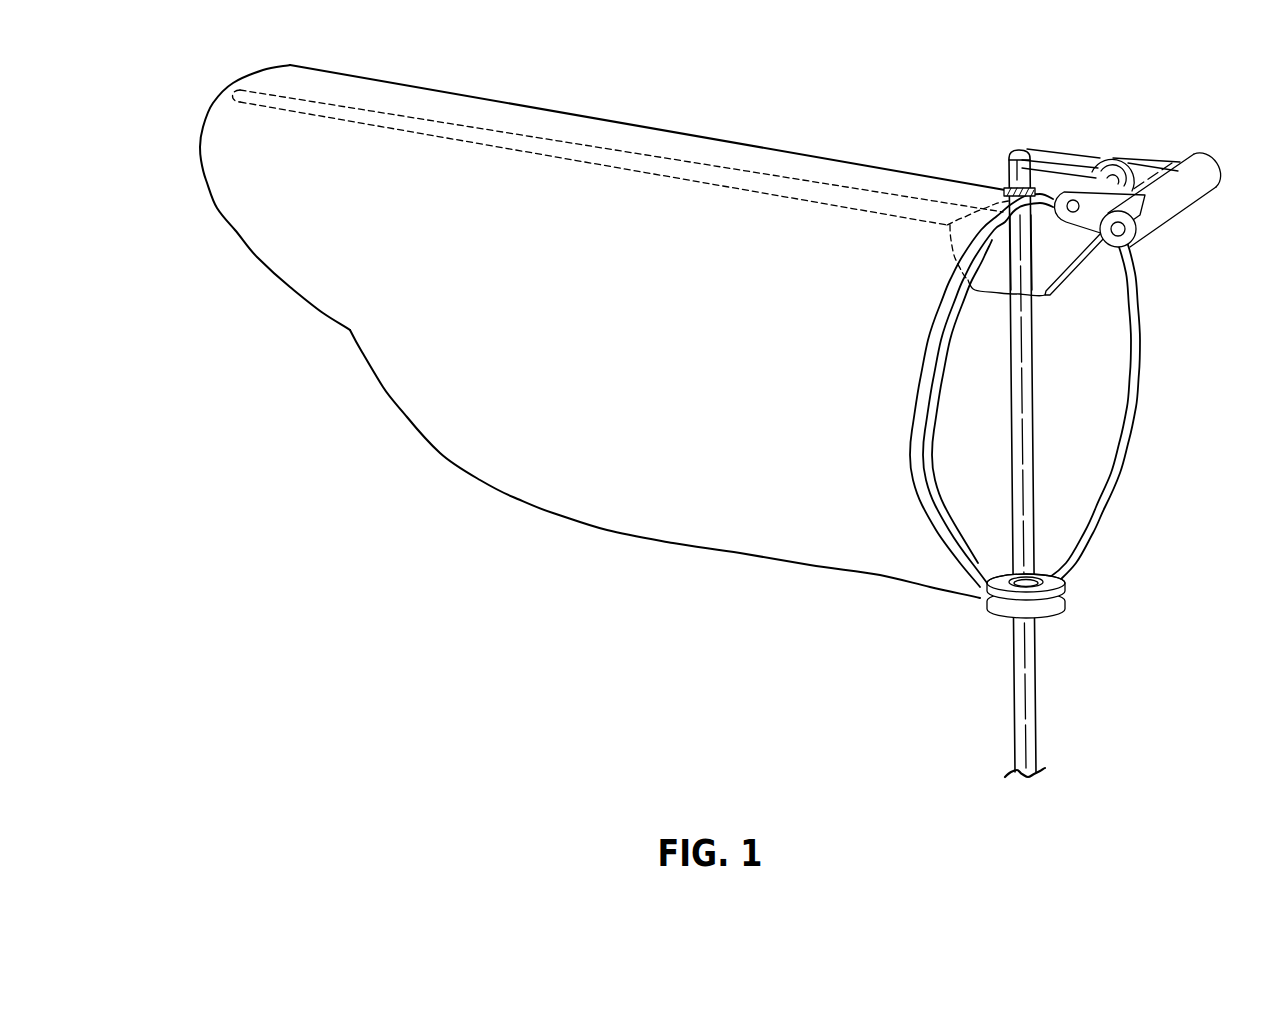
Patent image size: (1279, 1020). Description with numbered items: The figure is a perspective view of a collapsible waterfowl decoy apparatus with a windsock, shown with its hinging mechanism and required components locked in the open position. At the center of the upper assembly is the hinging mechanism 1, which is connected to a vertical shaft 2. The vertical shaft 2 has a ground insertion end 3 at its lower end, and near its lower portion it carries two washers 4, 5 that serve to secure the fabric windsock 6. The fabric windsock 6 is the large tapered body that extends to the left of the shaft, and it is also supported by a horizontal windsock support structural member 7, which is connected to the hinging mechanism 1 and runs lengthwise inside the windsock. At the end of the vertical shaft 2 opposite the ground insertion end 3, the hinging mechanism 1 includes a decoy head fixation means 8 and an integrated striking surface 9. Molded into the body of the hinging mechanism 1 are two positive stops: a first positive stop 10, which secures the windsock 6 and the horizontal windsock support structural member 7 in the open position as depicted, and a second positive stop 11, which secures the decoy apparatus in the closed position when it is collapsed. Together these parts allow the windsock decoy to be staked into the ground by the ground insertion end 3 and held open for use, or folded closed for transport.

The hinging mechanism 1 is at (1067, 252).
The vertical shaft 2 is at (1028, 717).
The ground insertion end 3 is at (1013, 770).
The washer 4 is at (1062, 585).
The washer 5 is at (1062, 602).
The fabric windsock 6 is at (512, 448).
The horizontal windsock support structural member 7 is at (663, 167).
The decoy head fixation means 8 is at (1197, 150).
The integrated striking surface 9 is at (1013, 150).
The first positive stop 10 is at (1002, 250).
The second positive stop 11 is at (1030, 258).